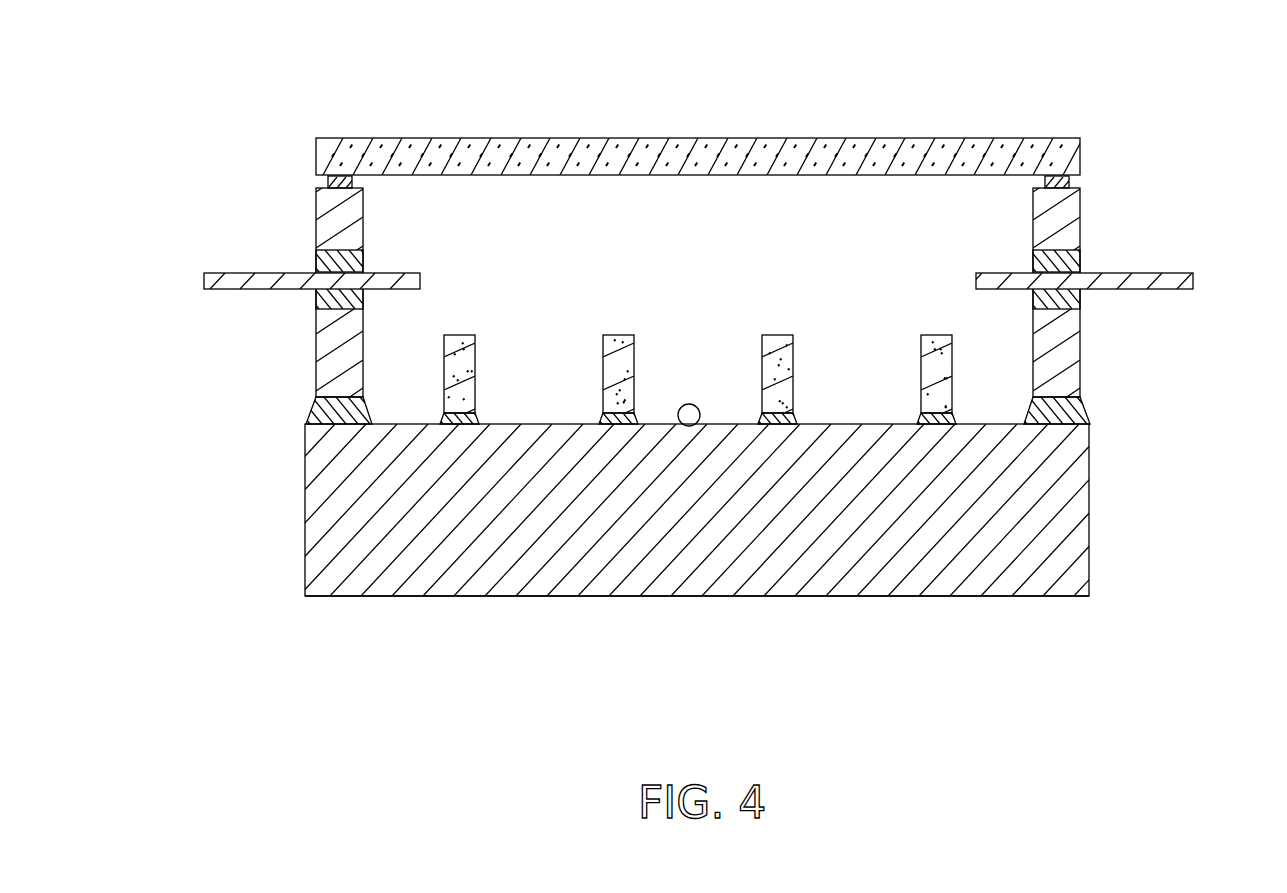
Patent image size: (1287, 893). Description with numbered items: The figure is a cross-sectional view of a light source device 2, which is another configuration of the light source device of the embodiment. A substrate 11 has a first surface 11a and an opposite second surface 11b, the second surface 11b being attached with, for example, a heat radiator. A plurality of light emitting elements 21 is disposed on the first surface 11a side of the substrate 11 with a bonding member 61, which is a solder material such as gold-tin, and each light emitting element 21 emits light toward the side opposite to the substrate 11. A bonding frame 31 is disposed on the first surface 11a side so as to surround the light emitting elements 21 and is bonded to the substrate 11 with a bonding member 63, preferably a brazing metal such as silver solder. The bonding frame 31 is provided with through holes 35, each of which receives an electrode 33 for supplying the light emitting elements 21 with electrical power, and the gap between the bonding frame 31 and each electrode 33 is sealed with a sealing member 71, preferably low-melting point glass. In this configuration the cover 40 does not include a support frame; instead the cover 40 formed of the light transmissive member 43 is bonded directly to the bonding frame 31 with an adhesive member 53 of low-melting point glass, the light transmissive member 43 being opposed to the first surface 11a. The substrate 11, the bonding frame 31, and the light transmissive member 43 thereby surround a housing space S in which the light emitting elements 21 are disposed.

The light source device 2 is at (1138, 65).
The substrate 11 is at (780, 565).
The first surface 11a is at (689, 428).
The second surface 11b is at (561, 597).
The light emitting element 21 is at (444, 357).
The bonding frame 31 is at (316, 207).
The electrode 33 is at (212, 283).
The through hole 35 is at (322, 302).
The cover 40 is at (697, 155).
The light transmissive member 43 is at (688, 116).
The adhesive member 53 is at (330, 182).
The bonding member 61 is at (455, 418).
The bonding member 63 is at (318, 401).
The sealing member 71 is at (330, 263).
The housing space S is at (853, 310).